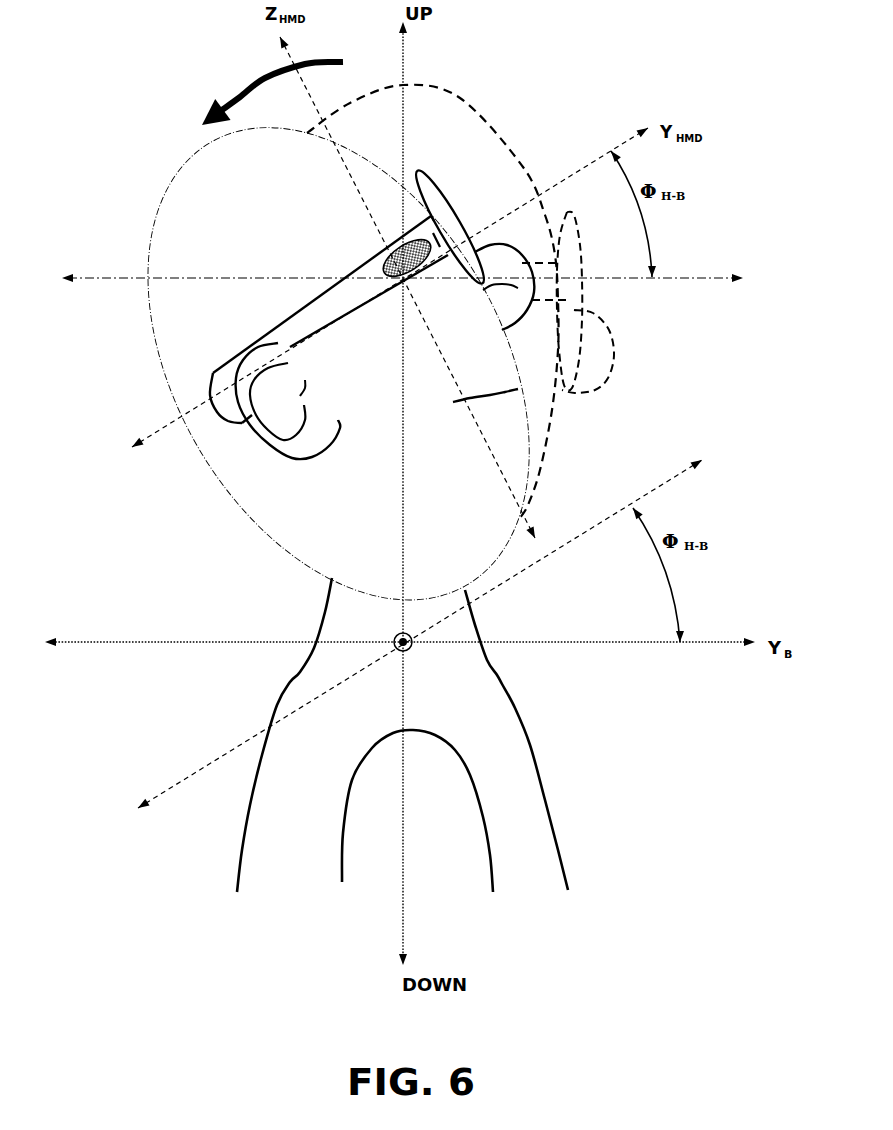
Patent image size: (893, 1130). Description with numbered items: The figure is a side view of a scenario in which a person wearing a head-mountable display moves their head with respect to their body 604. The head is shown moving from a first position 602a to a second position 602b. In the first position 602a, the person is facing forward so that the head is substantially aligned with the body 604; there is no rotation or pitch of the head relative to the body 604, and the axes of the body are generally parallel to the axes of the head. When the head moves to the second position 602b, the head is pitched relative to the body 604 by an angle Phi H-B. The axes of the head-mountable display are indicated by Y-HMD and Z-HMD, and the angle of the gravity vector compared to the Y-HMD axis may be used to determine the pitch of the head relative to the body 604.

The first position 602a is at (458, 100).
The second position 602b is at (170, 188).
The body 604 is at (243, 830).